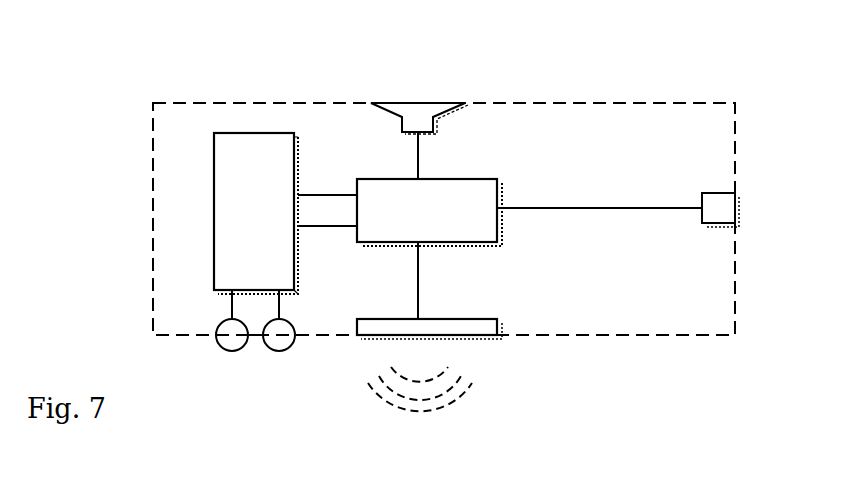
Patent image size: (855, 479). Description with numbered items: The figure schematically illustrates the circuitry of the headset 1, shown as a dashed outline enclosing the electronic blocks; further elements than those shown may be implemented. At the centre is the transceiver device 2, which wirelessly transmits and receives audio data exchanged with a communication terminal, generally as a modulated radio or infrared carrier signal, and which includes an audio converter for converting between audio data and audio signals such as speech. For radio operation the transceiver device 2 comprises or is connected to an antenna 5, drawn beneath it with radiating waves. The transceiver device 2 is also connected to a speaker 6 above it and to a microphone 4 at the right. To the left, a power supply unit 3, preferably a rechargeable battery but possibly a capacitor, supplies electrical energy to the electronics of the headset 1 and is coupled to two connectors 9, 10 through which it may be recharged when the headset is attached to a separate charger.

The headset 1 is at (603, 101).
The transceiver device 2 is at (417, 220).
The power supply unit 3 is at (244, 211).
The microphone 4 is at (750, 210).
The antenna 5 is at (482, 348).
The speaker 6 is at (417, 85).
The connector 9 is at (232, 365).
The connector 10 is at (280, 365).